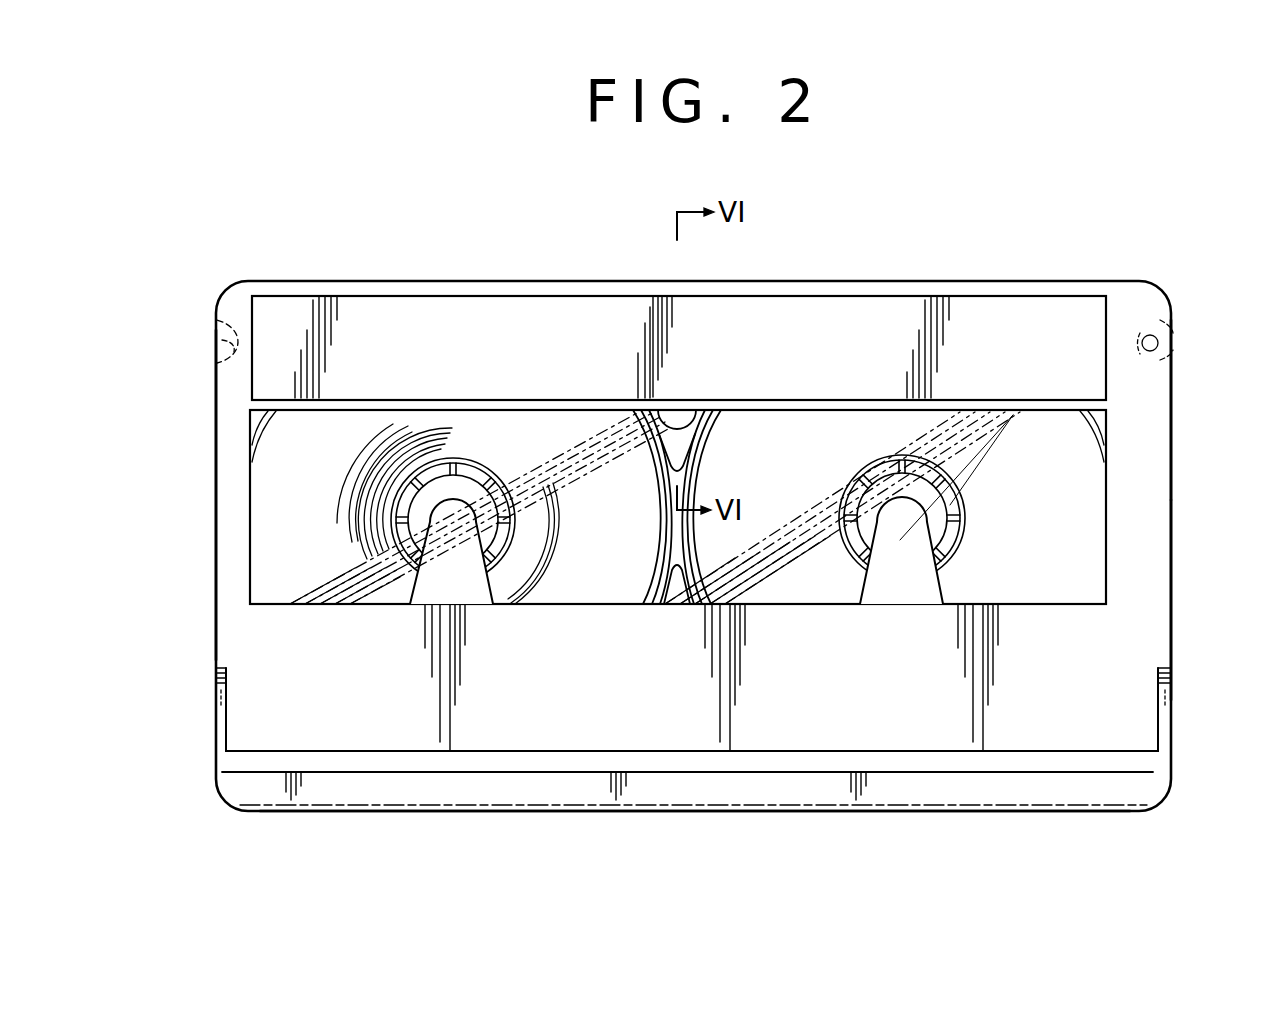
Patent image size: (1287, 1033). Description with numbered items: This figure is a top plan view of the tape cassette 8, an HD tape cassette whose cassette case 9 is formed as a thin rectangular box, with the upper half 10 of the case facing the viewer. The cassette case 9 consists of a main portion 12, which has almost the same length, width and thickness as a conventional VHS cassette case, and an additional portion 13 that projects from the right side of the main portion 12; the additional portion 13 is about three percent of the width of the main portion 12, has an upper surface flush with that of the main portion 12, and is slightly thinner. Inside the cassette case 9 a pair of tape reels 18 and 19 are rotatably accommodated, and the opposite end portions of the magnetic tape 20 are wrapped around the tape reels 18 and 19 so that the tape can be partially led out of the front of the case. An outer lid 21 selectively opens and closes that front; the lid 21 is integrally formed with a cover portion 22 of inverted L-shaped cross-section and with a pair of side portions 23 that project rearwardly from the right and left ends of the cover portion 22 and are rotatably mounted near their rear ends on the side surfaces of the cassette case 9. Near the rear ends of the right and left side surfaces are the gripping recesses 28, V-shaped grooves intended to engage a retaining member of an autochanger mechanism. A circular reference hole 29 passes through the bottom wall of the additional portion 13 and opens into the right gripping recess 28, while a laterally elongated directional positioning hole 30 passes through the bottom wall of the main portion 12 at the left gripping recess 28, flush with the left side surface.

The tape cassette 8 is at (890, 252).
The cassette case 9 is at (1052, 282).
The upper half 10 is at (1125, 523).
The main portion 12 is at (232, 543).
The additional portion 13 is at (1160, 440).
The tape reel 18 is at (1085, 580).
The tape reel 19 is at (265, 459).
The magnetic tape 20 is at (425, 445).
The outer lid 21 is at (568, 812).
The cover portion 22 is at (776, 800).
The side portions 23 is at (218, 717).
The gripping recess 28 is at (216, 322).
The reference hole 29 is at (1173, 350).
The directional positioning hole 30 is at (232, 347).